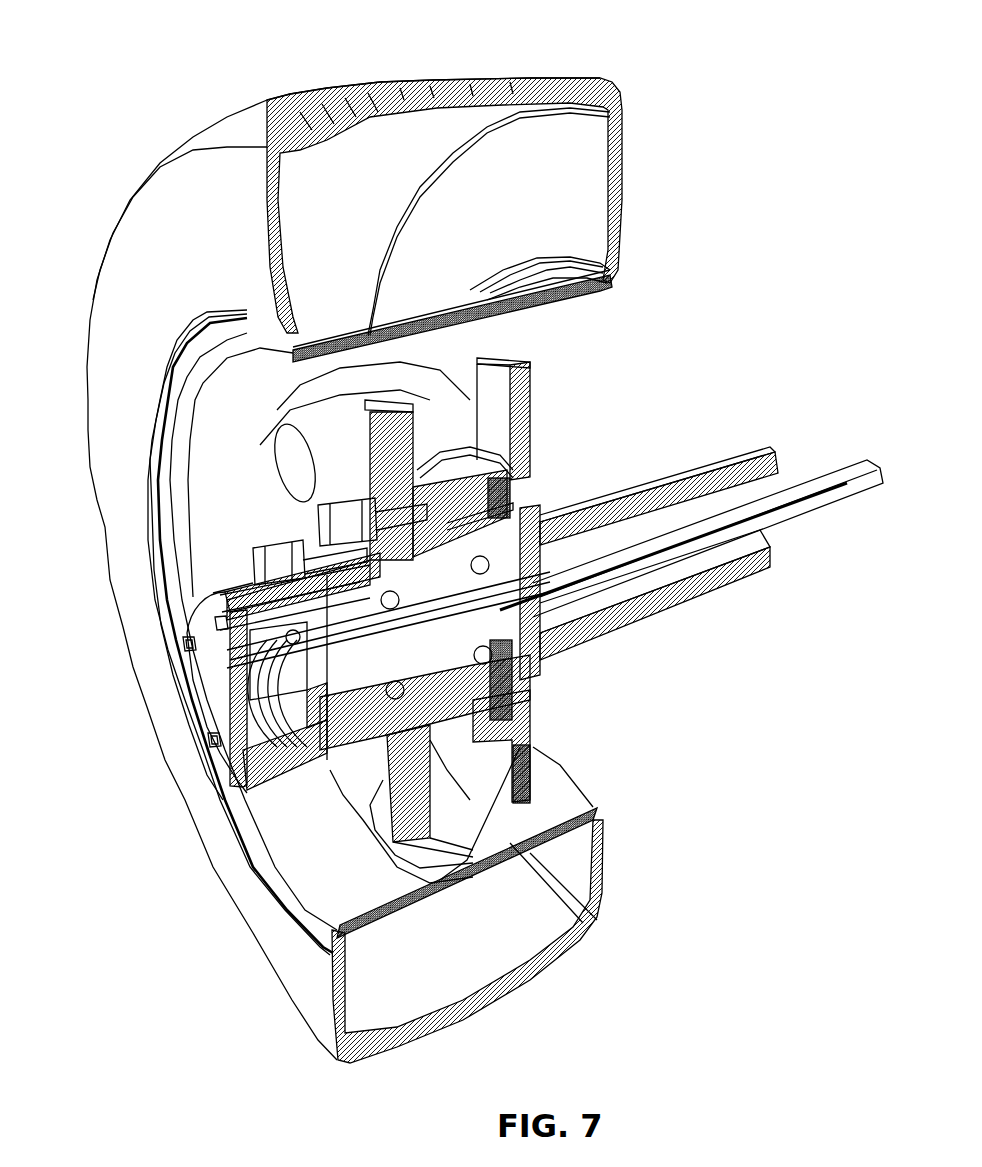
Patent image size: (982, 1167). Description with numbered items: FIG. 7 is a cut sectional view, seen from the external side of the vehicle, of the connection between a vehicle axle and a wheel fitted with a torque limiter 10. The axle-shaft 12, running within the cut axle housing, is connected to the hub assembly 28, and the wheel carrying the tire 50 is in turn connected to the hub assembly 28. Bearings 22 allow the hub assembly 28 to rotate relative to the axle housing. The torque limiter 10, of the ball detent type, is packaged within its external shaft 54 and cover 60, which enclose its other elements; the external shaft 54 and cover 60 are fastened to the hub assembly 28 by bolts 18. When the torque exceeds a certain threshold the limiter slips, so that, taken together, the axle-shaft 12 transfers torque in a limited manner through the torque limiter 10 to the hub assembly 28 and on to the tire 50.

The tire 50 is at (318, 90).
The torque limiter 10 is at (177, 607).
The bolts 18 is at (180, 643).
The cover 60 is at (213, 650).
The external shaft 54 is at (320, 763).
The hub assembly 28 is at (530, 380).
The bearings 22 is at (507, 678).
The axle-shaft 12 is at (748, 497).